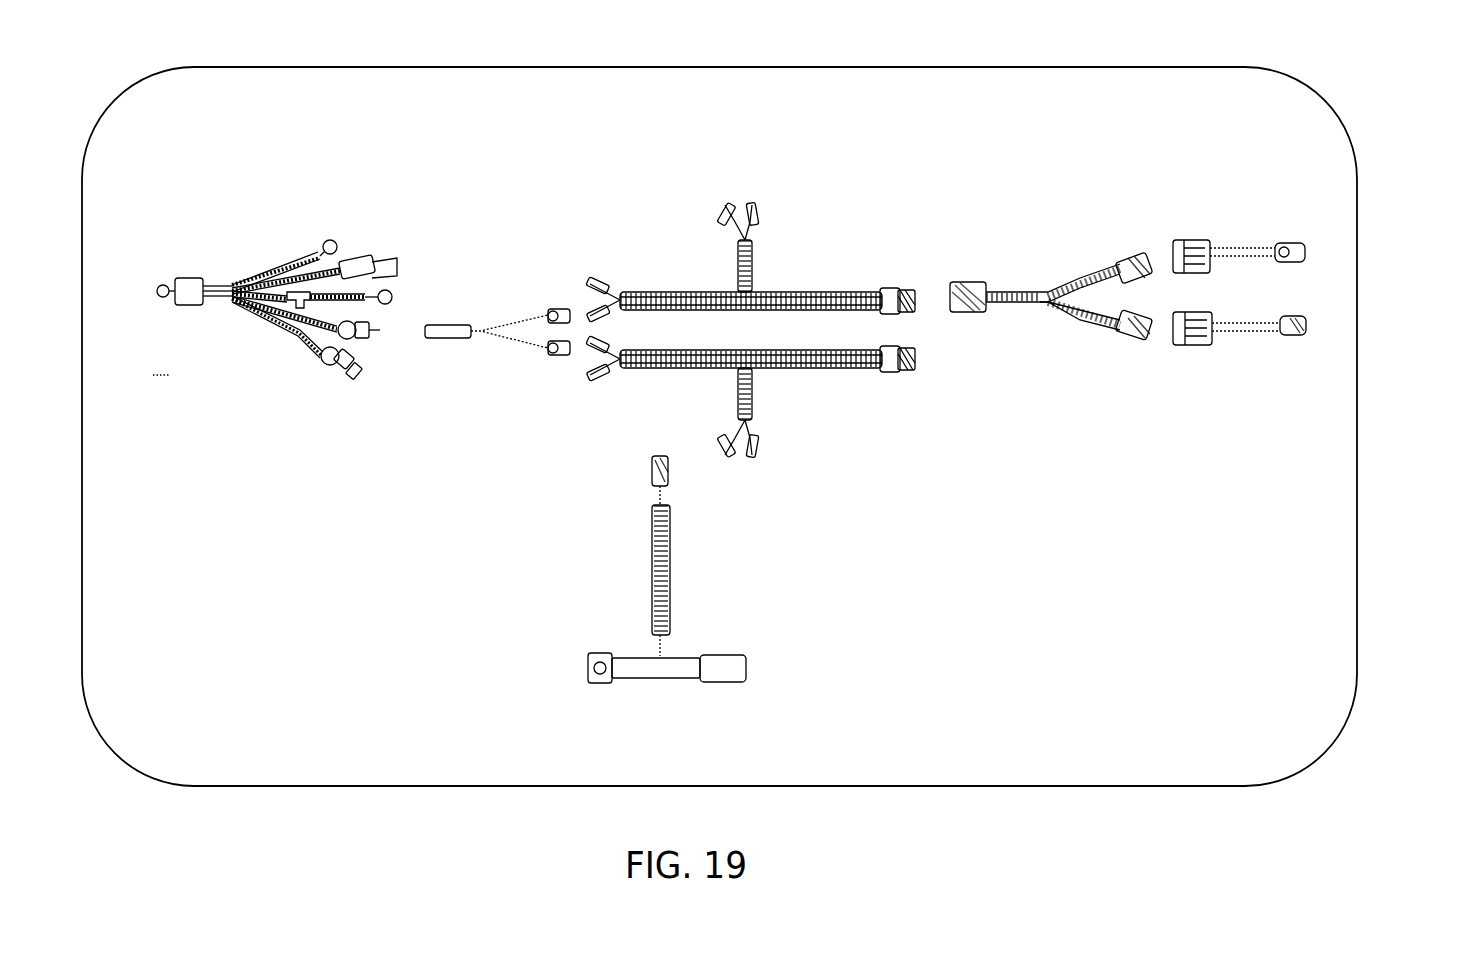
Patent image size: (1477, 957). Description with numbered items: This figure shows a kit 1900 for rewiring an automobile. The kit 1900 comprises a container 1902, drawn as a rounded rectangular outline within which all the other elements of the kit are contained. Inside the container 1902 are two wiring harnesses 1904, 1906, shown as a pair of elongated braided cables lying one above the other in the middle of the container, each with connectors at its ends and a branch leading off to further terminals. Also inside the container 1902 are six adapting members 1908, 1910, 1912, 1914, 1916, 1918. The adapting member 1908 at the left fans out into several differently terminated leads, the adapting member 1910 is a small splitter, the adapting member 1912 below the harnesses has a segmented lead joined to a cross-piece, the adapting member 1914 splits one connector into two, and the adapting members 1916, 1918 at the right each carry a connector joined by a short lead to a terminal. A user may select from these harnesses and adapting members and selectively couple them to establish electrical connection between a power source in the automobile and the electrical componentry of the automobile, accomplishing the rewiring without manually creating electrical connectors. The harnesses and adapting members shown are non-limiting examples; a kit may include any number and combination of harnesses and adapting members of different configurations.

The kit 1900 is at (1322, 89).
The container 1902 is at (1358, 530).
The wiring harness 1904 is at (798, 300).
The wiring harness 1906 is at (790, 370).
The adapting member 1908 is at (201, 286).
The adapting member 1910 is at (460, 338).
The adapting member 1912 is at (692, 668).
The adapting member 1914 is at (1053, 300).
The adapting member 1916 is at (1200, 245).
The adapting member 1918 is at (1205, 352).